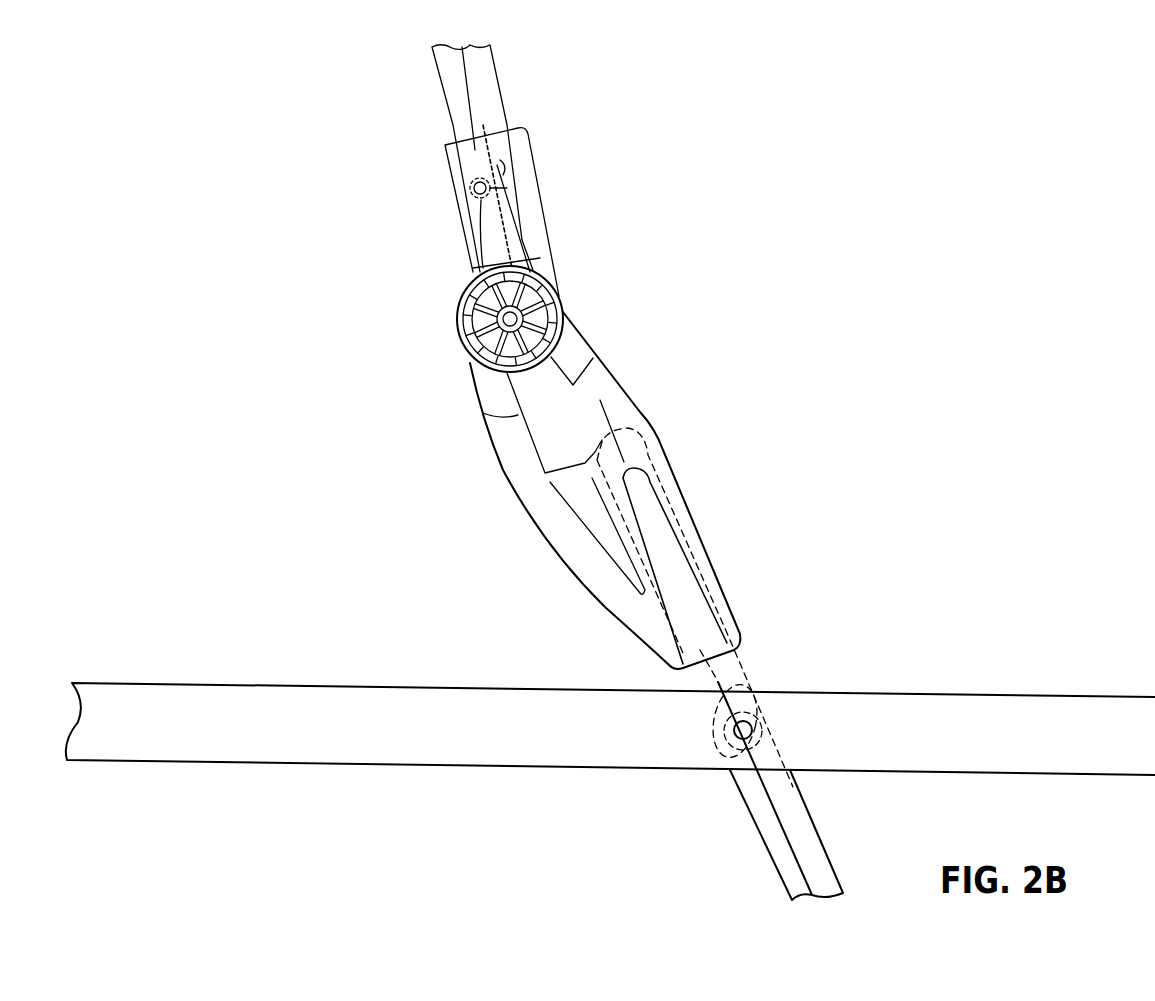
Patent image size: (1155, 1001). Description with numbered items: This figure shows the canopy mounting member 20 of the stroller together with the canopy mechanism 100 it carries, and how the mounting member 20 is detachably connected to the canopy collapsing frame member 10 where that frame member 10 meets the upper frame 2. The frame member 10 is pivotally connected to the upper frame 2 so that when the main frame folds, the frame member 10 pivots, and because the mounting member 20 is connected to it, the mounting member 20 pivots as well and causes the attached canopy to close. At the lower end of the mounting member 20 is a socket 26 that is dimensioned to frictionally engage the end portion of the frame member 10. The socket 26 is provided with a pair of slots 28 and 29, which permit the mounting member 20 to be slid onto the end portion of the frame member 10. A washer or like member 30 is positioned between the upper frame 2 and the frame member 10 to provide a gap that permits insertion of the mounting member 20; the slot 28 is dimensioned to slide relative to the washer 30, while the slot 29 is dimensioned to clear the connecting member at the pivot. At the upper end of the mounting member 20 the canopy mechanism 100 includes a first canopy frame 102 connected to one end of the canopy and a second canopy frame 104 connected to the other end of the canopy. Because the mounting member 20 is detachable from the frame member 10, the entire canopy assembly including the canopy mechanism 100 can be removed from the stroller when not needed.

The upper frame member 2 is at (1001, 744).
The canopy collapsing frame member 10 is at (834, 864).
The canopy mounting member 20 is at (645, 376).
The socket 26 is at (718, 652).
The slot 28 is at (667, 544).
The slot 29 is at (637, 469).
The washer 30 is at (763, 728).
The canopy mechanism 100 is at (578, 258).
The first canopy frame 102 is at (450, 71).
The second canopy frame 104 is at (500, 77).